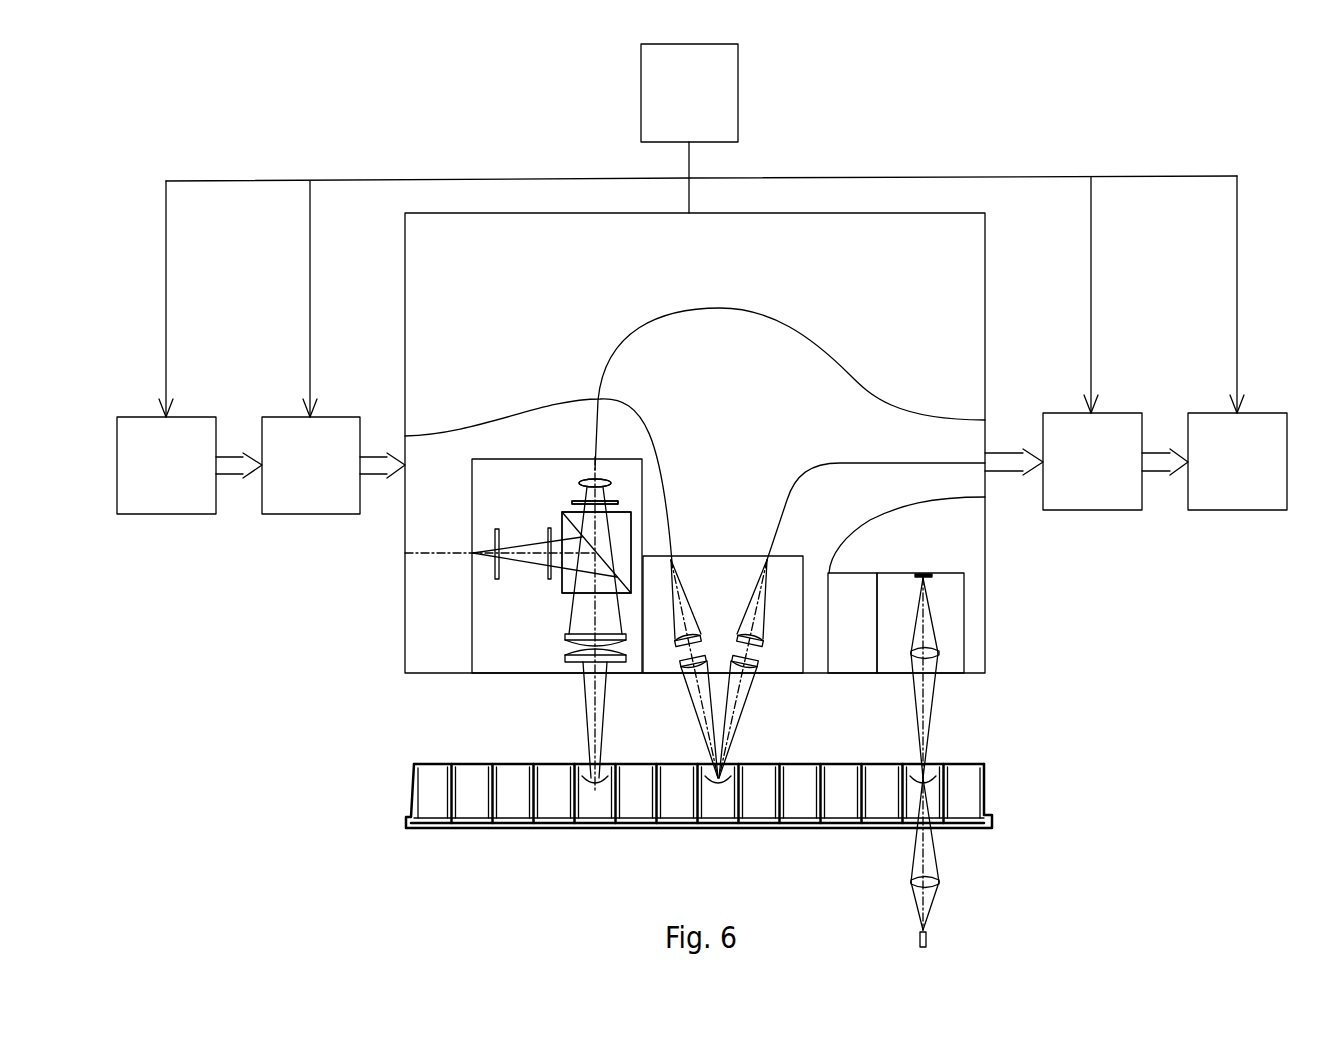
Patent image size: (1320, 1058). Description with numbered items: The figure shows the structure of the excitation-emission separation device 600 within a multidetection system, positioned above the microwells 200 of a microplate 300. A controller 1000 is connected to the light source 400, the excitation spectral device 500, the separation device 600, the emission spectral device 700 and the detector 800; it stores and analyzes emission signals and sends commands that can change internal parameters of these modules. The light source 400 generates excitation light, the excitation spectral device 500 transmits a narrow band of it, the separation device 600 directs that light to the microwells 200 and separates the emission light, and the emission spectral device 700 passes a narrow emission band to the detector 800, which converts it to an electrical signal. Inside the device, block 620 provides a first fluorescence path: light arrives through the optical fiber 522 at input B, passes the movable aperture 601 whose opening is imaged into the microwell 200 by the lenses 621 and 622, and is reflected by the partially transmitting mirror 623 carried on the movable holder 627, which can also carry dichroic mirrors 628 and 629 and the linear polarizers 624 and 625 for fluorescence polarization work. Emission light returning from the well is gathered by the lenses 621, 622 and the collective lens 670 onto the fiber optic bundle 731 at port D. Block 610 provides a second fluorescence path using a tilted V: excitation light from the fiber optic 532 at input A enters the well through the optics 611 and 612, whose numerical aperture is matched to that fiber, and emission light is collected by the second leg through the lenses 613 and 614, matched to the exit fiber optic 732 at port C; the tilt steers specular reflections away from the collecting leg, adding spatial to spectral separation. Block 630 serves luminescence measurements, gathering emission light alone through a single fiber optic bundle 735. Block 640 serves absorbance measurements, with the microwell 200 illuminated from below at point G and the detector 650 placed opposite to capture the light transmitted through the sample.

The controller 1000 is at (701, 128).
The light source 400 is at (166, 347).
The excitation spectral device 500 is at (310, 347).
The excitation-emission separation device 600 is at (695, 443).
The emission spectral device 700 is at (1063, 343).
The detector 800 is at (1214, 343).
The fiber optic 532 is at (538, 480).
The optical fiber 522 is at (500, 570).
The fiber optic bundle 731 is at (790, 389).
The exit fiber optic 732 is at (876, 497).
The fiber optic bundle 735 is at (907, 535).
The block 620 is at (546, 612).
The linear polarizer 625 is at (578, 484).
The linear polarizer 624 is at (547, 532).
The movable aperture 601 is at (499, 579).
The movable holder 627 is at (566, 594).
The partially transmitting mirror 623 is at (709, 502).
The dichroic mirror 628 is at (596, 552).
The dichroic mirror 629 is at (595, 502).
The collective lens 670 is at (650, 429).
The lens 621 is at (579, 637).
The lens 622 is at (579, 658).
The block 610 is at (723, 655).
The optics 611 is at (674, 641).
The optics 612 is at (677, 661).
The lens 613 is at (765, 641).
The lens 614 is at (762, 661).
The block 630 is at (852, 623).
The block 640 is at (920, 762).
The detector 650 is at (906, 554).
The microplate 300 is at (741, 795).
The microwell 200 is at (759, 791).